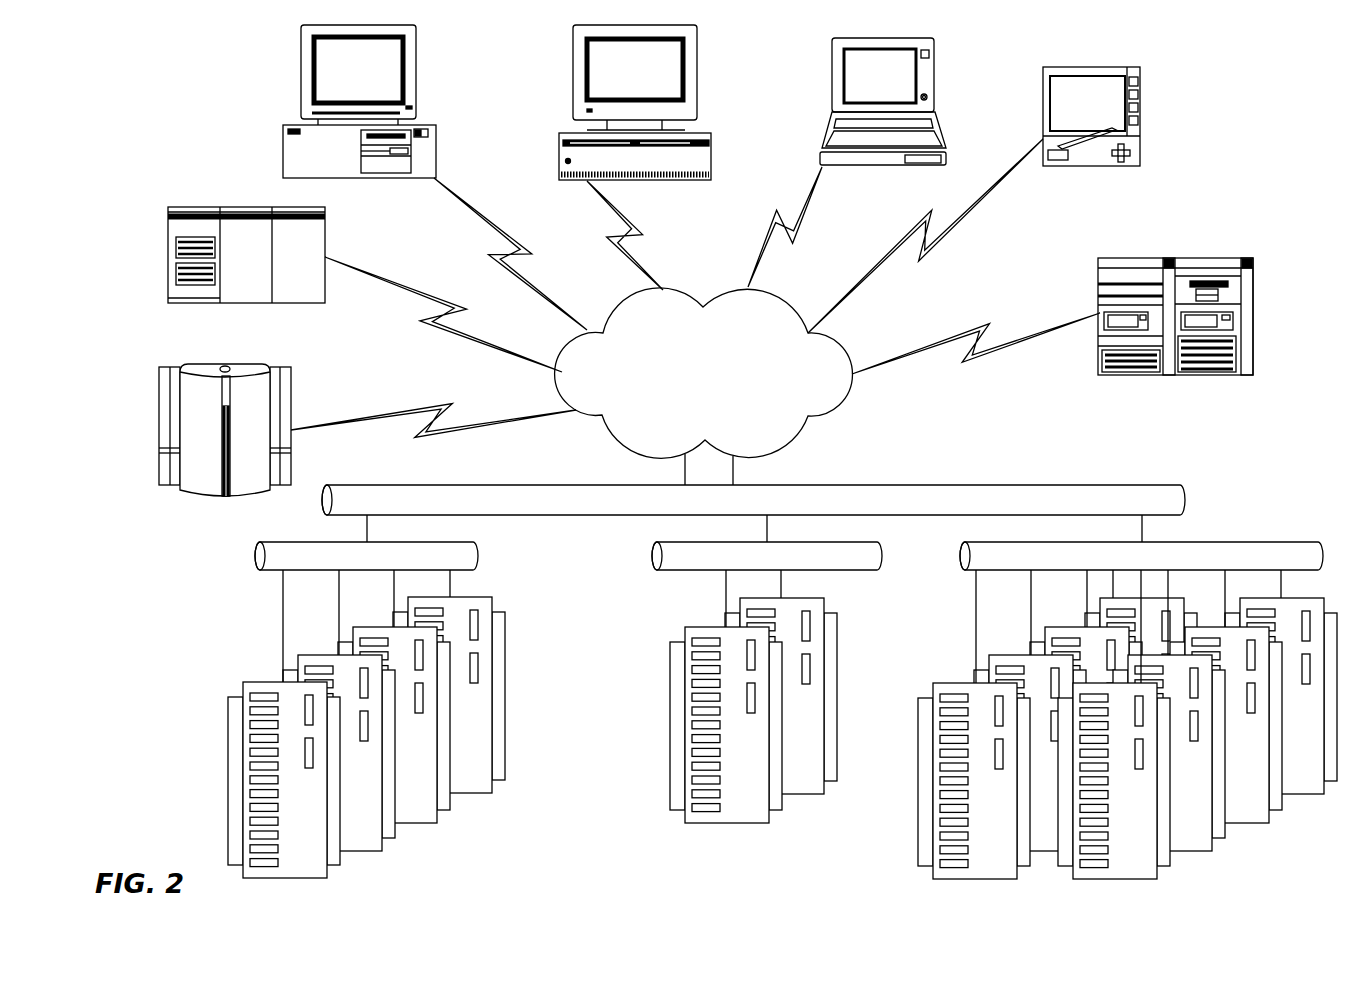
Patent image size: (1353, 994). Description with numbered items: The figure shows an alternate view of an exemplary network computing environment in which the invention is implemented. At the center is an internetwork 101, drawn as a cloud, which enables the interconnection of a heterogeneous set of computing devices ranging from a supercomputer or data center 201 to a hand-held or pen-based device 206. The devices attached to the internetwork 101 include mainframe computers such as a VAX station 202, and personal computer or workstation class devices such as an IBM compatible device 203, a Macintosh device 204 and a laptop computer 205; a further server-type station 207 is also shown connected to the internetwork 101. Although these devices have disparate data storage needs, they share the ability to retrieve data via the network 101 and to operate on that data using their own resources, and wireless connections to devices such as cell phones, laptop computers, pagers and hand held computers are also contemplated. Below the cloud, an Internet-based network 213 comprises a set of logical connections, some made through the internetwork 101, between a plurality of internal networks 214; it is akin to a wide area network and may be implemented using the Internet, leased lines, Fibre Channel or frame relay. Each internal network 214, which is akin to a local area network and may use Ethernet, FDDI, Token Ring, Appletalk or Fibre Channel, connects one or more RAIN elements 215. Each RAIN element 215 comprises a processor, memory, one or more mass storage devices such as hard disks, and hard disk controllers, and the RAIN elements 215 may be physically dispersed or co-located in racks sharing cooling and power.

The internetwork 101 is at (689, 382).
The supercomputer or data center 201 is at (159, 430).
The VAX station 202 is at (168, 256).
The IBM compatible device 203 is at (283, 143).
The Macintosh device 204 is at (559, 145).
The laptop computer 205 is at (832, 100).
The hand-held or pen-based device 206 is at (1043, 112).
The server rack 207 is at (1255, 315).
The Internet-based network 213 is at (600, 515).
The internal network 214 is at (255, 556).
The RAIN element 215 is at (228, 782).